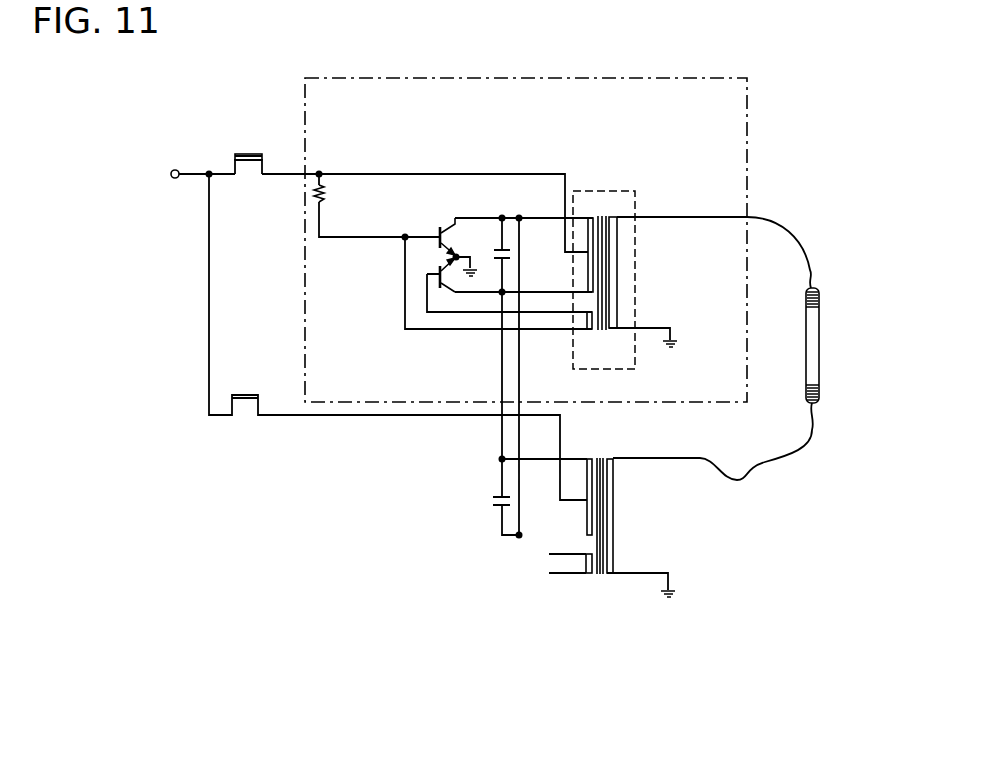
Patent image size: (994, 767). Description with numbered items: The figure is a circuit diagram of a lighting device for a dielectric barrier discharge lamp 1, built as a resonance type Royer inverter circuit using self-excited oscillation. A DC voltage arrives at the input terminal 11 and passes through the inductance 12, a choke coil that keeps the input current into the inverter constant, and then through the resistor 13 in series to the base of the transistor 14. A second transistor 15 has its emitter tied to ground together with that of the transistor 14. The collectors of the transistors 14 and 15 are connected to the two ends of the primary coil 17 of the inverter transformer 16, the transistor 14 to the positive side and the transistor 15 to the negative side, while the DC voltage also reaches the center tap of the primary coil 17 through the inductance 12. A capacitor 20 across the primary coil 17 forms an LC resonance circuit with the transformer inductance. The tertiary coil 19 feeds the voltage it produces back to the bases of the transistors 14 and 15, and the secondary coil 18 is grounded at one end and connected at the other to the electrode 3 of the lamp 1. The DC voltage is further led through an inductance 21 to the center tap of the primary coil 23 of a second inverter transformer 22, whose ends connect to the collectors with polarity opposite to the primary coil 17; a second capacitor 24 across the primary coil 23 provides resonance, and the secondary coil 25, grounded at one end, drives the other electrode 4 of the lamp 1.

The dielectric barrier discharge lamp 1 is at (820, 345).
The electrode 3 is at (820, 290).
The other electrode 4 is at (818, 388).
The input terminal 11 is at (175, 172).
The inductance 12 is at (250, 153).
The resistor 13 is at (332, 193).
The transistor 14 is at (440, 228).
The transistor 15 is at (420, 273).
The inverter transformer 16 is at (637, 200).
The primary coil 17 is at (585, 210).
The secondary coil 18 is at (622, 288).
The tertiary coil 19 is at (583, 318).
The capacitor 20 is at (492, 252).
The inductance 21 is at (243, 395).
The second inverter transformer 22 is at (598, 588).
The primary coil 23 is at (575, 457).
The second capacitor 24 is at (485, 502).
The secondary coil 25 is at (615, 520).